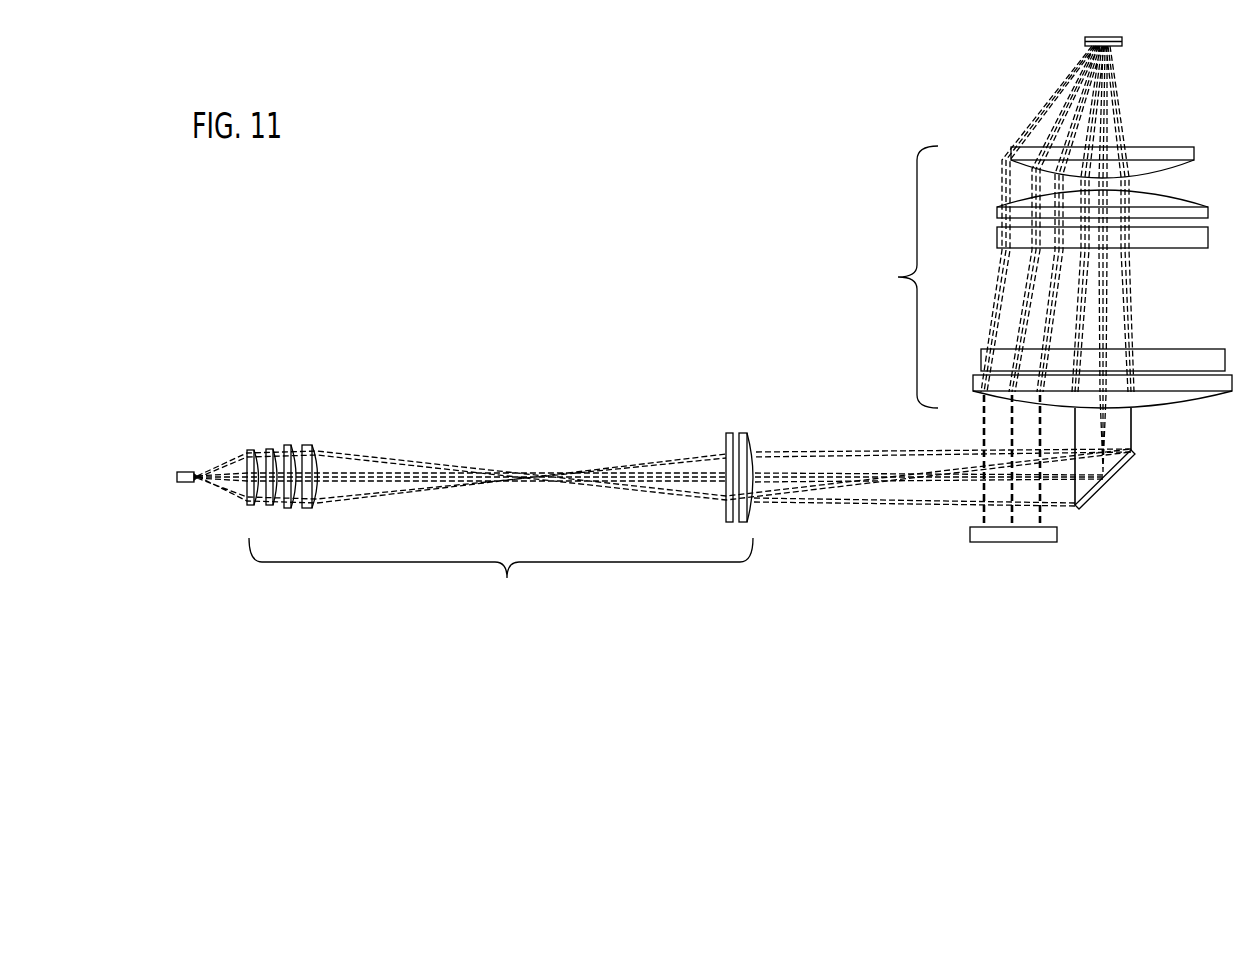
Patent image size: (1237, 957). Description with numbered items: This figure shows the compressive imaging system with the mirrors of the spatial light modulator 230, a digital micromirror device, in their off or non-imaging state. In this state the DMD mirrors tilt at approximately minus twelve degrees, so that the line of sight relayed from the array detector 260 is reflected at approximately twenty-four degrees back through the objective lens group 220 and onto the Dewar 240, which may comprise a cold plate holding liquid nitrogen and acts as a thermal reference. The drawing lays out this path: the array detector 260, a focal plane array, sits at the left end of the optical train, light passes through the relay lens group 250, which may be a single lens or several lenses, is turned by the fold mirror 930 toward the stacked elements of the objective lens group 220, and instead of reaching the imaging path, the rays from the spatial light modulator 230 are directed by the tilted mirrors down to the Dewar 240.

The objective lens group 220 is at (898, 277).
The spatial light modulator 230 is at (1103, 37).
The Dewar 240 is at (1012, 542).
The relay lens group 250 is at (507, 578).
The array detector 260 is at (185, 472).
The mirror 930 is at (1088, 491).